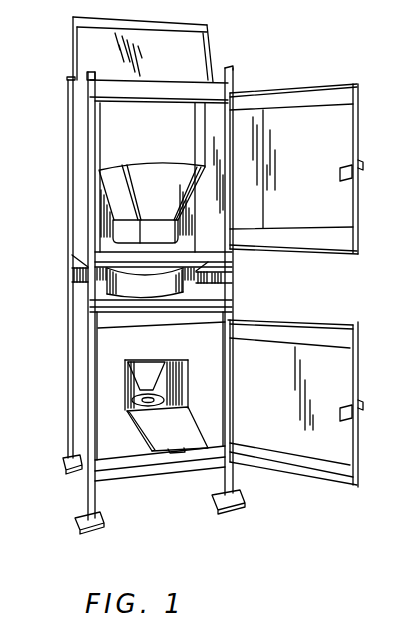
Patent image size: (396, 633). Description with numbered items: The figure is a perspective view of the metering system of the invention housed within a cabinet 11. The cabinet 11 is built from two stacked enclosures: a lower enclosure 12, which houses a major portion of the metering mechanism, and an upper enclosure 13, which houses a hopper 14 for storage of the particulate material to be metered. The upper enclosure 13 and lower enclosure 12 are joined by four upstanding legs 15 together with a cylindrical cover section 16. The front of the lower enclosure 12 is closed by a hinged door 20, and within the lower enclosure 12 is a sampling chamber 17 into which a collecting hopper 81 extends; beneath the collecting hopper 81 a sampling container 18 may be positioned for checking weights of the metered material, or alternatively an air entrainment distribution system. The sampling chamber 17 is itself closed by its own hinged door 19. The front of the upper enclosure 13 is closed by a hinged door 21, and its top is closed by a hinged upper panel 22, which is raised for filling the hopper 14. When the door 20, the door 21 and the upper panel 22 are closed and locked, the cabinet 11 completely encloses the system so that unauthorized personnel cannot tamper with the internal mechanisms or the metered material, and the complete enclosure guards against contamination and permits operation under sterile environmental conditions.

The cabinet 11 is at (297, 48).
The lower enclosure 12 is at (78, 363).
The upper enclosure 13 is at (80, 128).
The hopper 14 is at (169, 146).
The upstanding legs 15 is at (92, 281).
The cylindrical cover section 16 is at (160, 290).
The sampling chamber 17 is at (190, 368).
The sampling container 18 is at (128, 413).
The hinged door 19 is at (183, 432).
The hinged door 20 is at (327, 370).
The hinged door 21 is at (335, 143).
The hinged upper panel 22 is at (188, 50).
The collecting hopper 81 is at (129, 372).